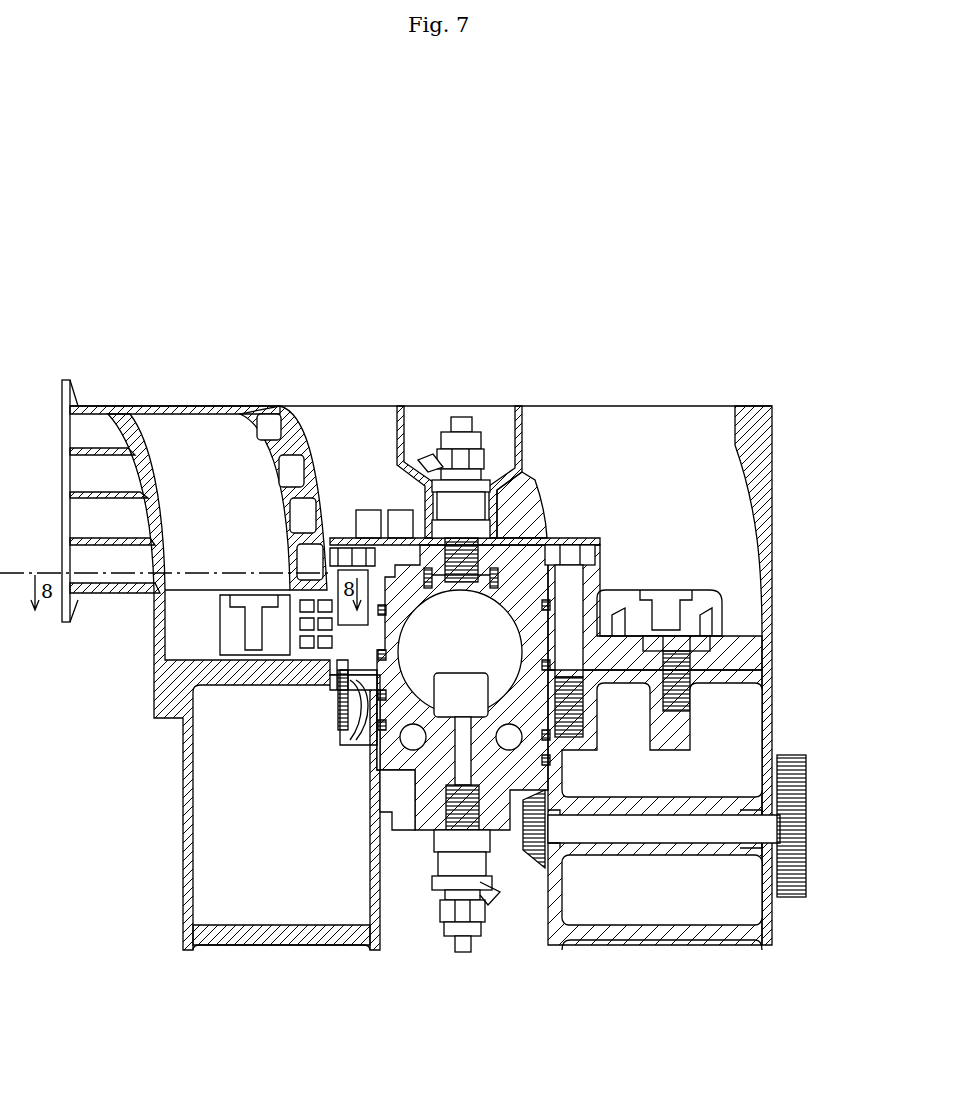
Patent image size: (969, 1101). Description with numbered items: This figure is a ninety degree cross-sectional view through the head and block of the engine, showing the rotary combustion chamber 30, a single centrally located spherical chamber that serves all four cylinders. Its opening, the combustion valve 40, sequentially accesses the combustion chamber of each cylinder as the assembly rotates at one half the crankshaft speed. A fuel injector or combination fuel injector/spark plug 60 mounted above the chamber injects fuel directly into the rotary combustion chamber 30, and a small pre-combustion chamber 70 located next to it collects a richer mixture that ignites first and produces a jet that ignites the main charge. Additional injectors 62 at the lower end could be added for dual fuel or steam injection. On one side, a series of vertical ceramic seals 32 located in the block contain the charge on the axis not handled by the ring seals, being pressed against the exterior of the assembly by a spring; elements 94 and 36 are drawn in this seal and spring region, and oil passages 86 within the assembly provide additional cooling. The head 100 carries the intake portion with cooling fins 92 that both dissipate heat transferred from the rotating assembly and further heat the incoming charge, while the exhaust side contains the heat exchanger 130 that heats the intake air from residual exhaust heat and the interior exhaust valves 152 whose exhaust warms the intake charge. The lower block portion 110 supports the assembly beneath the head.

The heat exchanger 130 is at (262, 404).
The interior exhaust valves 152 is at (262, 627).
The cooling fins 92 is at (345, 520).
The cylinder head body 100 is at (758, 440).
The rotary combustion chamber 30 is at (460, 652).
The pre-combustion chamber 70 is at (493, 580).
The combustion valve 40 is at (461, 751).
The fuel injector/spark plug 60 is at (454, 499).
The additional injectors 62 is at (466, 891).
The oil passages 86 is at (512, 738).
The seal ring 94 is at (340, 668).
The spring 36 is at (360, 700).
The vertical ceramic seals 32 is at (357, 740).
The engine block 110 is at (768, 684).